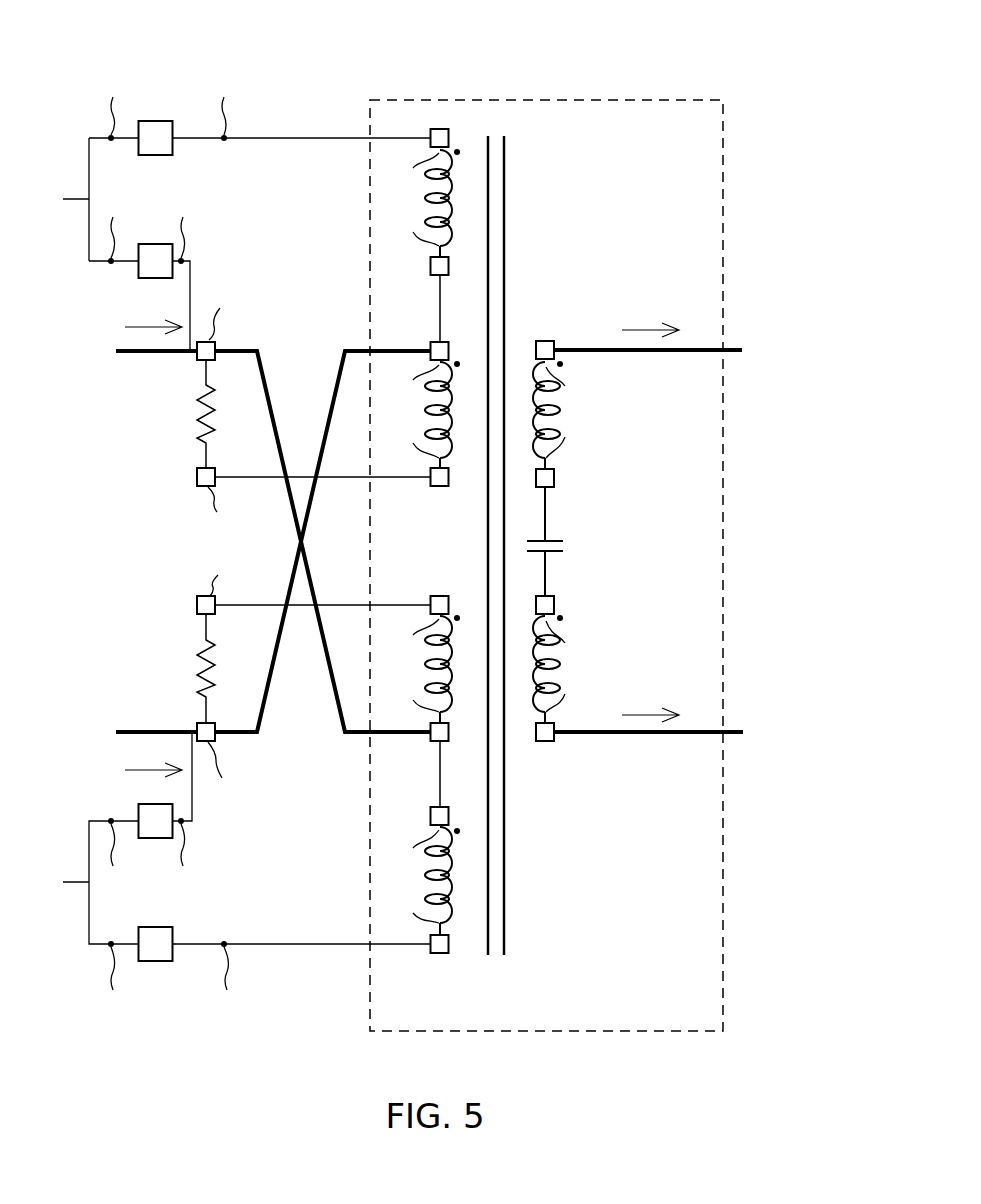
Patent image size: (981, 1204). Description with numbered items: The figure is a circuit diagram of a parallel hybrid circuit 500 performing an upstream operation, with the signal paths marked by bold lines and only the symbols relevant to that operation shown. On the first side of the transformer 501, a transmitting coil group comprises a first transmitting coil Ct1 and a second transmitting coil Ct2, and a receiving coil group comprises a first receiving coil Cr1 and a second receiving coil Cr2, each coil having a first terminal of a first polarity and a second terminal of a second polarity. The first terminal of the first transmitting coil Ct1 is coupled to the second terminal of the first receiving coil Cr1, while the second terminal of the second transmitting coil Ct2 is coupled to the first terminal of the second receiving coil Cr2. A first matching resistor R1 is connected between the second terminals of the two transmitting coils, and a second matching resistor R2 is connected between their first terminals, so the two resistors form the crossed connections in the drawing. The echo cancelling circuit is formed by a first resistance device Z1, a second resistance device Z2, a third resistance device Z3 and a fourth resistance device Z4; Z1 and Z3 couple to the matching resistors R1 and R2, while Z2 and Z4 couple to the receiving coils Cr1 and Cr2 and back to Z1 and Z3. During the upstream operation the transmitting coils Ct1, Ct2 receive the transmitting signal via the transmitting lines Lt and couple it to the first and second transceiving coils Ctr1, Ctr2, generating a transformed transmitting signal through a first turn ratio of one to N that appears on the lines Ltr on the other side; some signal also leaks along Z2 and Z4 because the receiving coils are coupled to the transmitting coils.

The parallel hybrid circuit 500 is at (707, 76).
The transformer 501 is at (545, 100).
The first resistance device Z1 is at (170, 245).
The second resistance device Z2 is at (157, 121).
The third resistance device Z3 is at (168, 838).
The fourth resistance device Z4 is at (160, 962).
The first matching resistor R1 is at (215, 414).
The second matching resistor R2 is at (216, 668).
The first receiving coil Cr1 is at (453, 237).
The second receiving coil Cr2 is at (453, 917).
The first transmitting coil Ct1 is at (453, 447).
The second transmitting coil Ct2 is at (453, 704).
The first transceiving coil Ctr1 is at (558, 410).
The second transceiving coil Ctr2 is at (558, 666).
The transmitting lines Lt is at (130, 730).
The transmission line Ltr is at (686, 770).